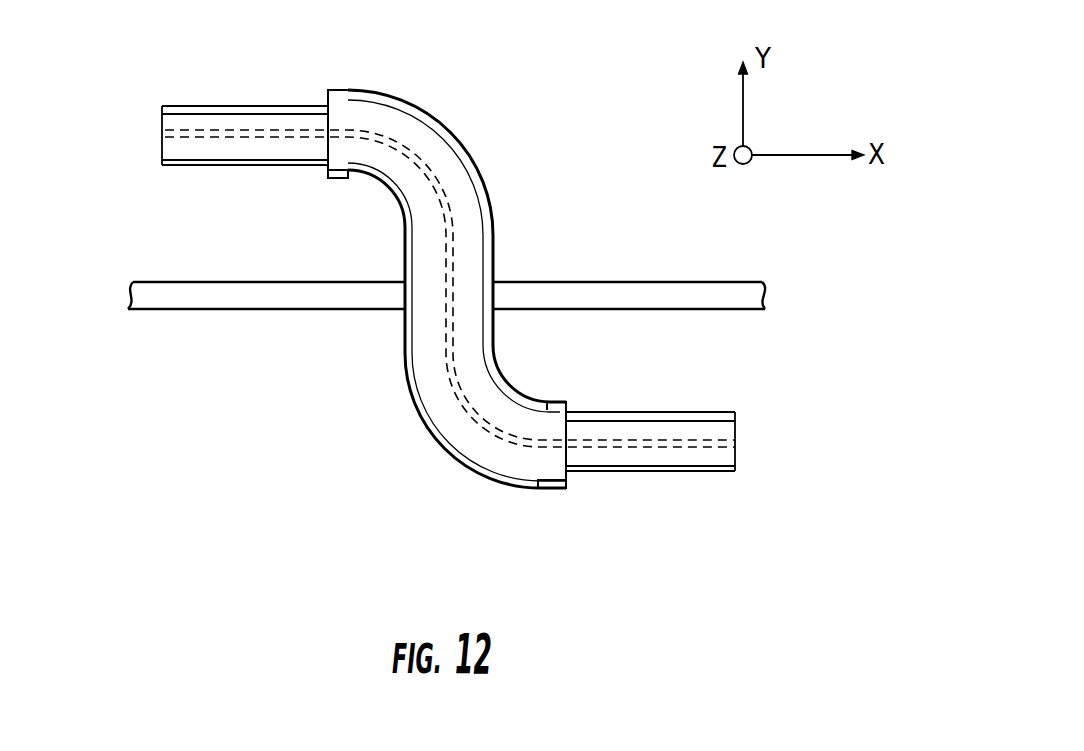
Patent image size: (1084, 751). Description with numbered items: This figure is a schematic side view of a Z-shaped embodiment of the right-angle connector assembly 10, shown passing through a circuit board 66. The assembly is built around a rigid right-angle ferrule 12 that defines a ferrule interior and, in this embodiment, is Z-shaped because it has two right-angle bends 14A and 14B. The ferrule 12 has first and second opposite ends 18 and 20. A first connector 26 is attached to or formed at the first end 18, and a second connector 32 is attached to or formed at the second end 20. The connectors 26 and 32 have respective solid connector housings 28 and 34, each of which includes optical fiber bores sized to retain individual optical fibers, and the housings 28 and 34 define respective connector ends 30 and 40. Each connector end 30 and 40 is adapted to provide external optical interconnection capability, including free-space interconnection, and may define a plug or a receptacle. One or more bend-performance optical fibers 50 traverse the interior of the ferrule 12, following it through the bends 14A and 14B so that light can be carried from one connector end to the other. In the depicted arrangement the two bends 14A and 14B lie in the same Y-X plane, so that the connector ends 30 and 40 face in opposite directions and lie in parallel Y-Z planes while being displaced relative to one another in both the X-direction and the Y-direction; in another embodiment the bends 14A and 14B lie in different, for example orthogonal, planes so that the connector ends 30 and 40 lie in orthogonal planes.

The right-angle connector assembly 10 is at (450, 280).
The right-angle ferrule 12 is at (483, 187).
The right-angle bend 14A is at (362, 212).
The right-angle bend 14B is at (525, 370).
The first end 18 is at (328, 102).
The second end 20 is at (570, 490).
The connector 26 is at (193, 127).
The connector housing 28 is at (220, 165).
The connector end 30 is at (163, 129).
The connector 32 is at (678, 422).
The connector housing 34 is at (665, 412).
The connector end 40 is at (737, 452).
The bend-performance optical fiber 50 is at (442, 195).
The circuit board 66 is at (747, 290).